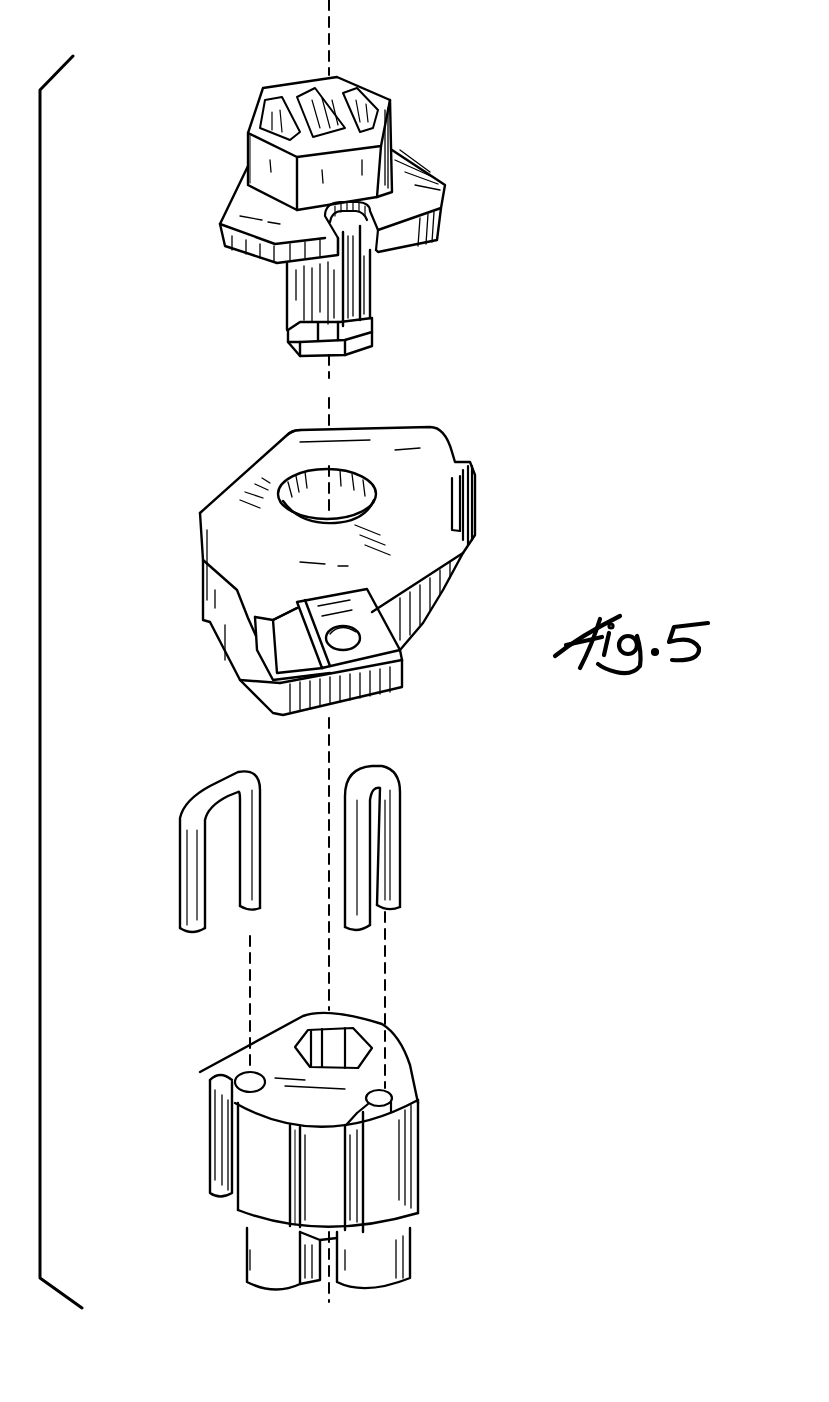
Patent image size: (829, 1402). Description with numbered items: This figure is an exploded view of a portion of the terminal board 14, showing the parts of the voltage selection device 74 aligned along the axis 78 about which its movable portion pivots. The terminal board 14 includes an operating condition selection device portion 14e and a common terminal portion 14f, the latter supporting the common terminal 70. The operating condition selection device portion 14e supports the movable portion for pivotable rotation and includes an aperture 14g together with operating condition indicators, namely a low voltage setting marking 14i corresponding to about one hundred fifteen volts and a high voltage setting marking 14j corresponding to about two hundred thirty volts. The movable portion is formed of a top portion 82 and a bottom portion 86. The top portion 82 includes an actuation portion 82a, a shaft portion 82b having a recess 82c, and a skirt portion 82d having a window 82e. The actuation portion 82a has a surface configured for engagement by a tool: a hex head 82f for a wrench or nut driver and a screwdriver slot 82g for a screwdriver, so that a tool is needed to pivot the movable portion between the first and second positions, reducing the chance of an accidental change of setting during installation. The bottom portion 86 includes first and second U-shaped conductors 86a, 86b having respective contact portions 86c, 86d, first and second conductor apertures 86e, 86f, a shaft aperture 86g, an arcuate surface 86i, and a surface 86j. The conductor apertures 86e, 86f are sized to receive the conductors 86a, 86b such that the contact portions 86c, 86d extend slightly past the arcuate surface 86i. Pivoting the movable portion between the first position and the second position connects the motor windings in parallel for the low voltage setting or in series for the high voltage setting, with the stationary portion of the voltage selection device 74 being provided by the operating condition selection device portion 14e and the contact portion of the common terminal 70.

The terminal board 14 is at (562, 507).
The operating condition selection device portion 14e is at (274, 443).
The common terminal portion 14f is at (290, 637).
The aperture 14g is at (344, 484).
The low voltage setting marking 14i is at (394, 514).
The high voltage setting marking 14j is at (244, 534).
The common terminal 70 is at (360, 612).
The voltage selection device 74 is at (512, 1174).
The axis 78 is at (329, 378).
The top portion 82 is at (522, 131).
The actuation portion 82a is at (362, 92).
The shaft portion 82b is at (297, 286).
The recess 82c is at (362, 323).
The skirt portion 82d is at (430, 200).
The window 82e is at (376, 262).
The hex head 82f is at (250, 149).
The screwdriver slot 82g is at (307, 95).
The bottom portion 86 is at (570, 926).
The first U-shaped conductor 86a is at (367, 774).
The second U-shaped conductor 86b is at (213, 790).
The contact portion 86c is at (378, 858).
The contact portion 86d is at (192, 884).
The first conductor aperture 86e is at (392, 1096).
The second conductor aperture 86f is at (202, 1073).
The shaft aperture 86g is at (344, 1052).
The arcuate surface 86i is at (283, 1173).
The surface 86j is at (354, 1020).